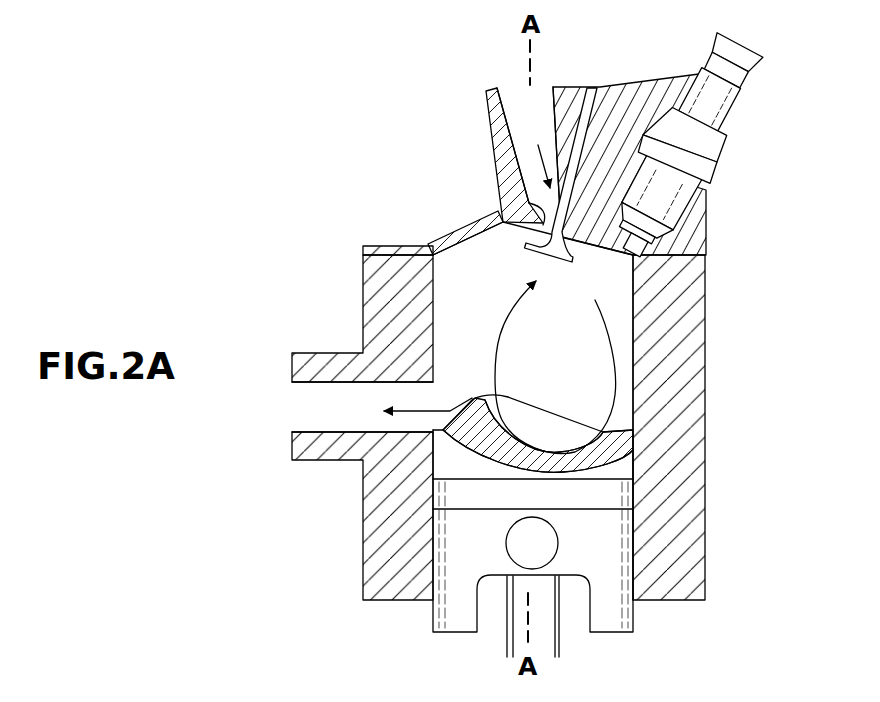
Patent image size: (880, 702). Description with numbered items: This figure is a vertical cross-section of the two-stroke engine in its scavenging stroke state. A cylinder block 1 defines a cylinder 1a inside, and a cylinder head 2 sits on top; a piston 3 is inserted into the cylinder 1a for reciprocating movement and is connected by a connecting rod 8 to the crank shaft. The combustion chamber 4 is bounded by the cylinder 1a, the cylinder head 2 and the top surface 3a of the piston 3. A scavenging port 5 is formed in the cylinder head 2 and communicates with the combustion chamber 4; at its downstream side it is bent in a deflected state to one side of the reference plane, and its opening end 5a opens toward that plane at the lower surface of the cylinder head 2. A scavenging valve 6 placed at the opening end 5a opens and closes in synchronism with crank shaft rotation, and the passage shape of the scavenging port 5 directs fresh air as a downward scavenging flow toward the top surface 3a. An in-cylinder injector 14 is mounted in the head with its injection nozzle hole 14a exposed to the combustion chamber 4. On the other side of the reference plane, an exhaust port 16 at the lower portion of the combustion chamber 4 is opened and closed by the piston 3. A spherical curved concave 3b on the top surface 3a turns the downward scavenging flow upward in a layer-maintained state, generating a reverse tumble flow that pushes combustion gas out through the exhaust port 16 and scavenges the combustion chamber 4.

The cylinder block 1 is at (705, 478).
The cylinder 1a is at (636, 325).
The cylinder head 2 is at (577, 92).
The piston 3 is at (626, 605).
The top surface of the piston 3a is at (467, 410).
The curved concave 3b is at (617, 428).
The combustion chamber 4 is at (463, 258).
The scavenging port 5 is at (522, 135).
The opening end 5a is at (538, 228).
The scavenging valve 6 is at (595, 97).
The connecting rod 8 is at (507, 637).
The in-cylinder injector 14 is at (702, 148).
The injection nozzle hole 14a is at (633, 257).
The exhaust port 16 is at (352, 411).